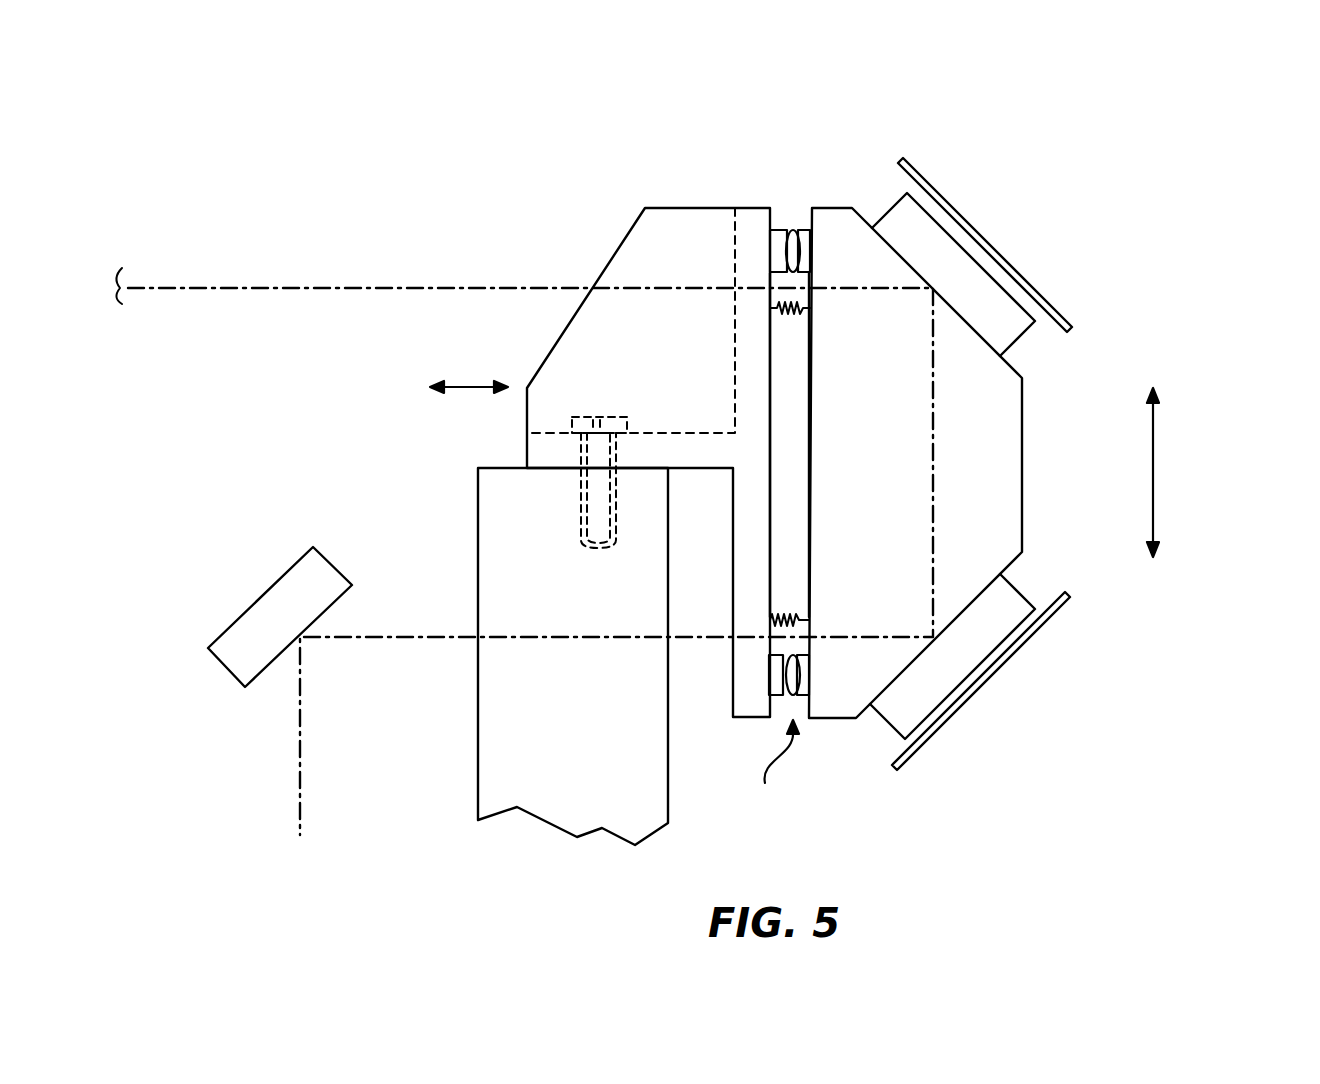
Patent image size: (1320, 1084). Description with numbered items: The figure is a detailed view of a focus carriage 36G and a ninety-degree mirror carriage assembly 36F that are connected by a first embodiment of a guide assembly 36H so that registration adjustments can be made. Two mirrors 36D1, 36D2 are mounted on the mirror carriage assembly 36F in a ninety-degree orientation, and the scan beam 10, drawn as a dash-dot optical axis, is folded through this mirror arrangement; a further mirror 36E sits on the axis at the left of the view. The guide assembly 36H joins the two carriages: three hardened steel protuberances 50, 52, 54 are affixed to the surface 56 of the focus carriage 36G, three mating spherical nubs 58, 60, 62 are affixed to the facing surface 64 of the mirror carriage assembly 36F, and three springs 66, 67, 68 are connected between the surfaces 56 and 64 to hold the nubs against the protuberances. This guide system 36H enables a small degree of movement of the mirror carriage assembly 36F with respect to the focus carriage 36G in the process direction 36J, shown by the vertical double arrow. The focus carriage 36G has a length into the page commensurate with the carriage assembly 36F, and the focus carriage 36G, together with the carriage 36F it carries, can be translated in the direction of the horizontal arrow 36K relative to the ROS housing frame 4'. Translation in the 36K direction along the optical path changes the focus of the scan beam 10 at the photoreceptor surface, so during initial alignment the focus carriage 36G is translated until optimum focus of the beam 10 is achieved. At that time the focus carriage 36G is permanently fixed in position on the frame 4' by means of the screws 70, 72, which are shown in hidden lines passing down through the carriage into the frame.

The scan beam 10 is at (300, 800).
The focus carriage 36G is at (708, 232).
The ROS housing frame 4' is at (548, 656).
The screw 70 is at (614, 434).
The screw 72 is at (602, 417).
The translation direction arrow 36K is at (465, 383).
The mirror carriage assembly 36F is at (842, 232).
The mirror 36D1 is at (978, 332).
The mirror 36D2 is at (973, 595).
The hardened steel protuberance 52 is at (768, 180).
The hardened steel protuberance 54 is at (783, 237).
The spherical nub 60 is at (815, 197).
The spherical nub 62 is at (792, 237).
The spring 67 is at (841, 336).
The spring 68 is at (790, 312).
The surface of carriage 36G 56 is at (770, 392).
The surface of carriage assembly 36F 64 is at (809, 483).
The spring 66 is at (787, 617).
The hardened steel protuberance 50 is at (775, 675).
The spherical nub 58 is at (803, 673).
The guide assembly 36H is at (770, 766).
The process direction 36J is at (1153, 470).
The mirror 36E is at (260, 597).